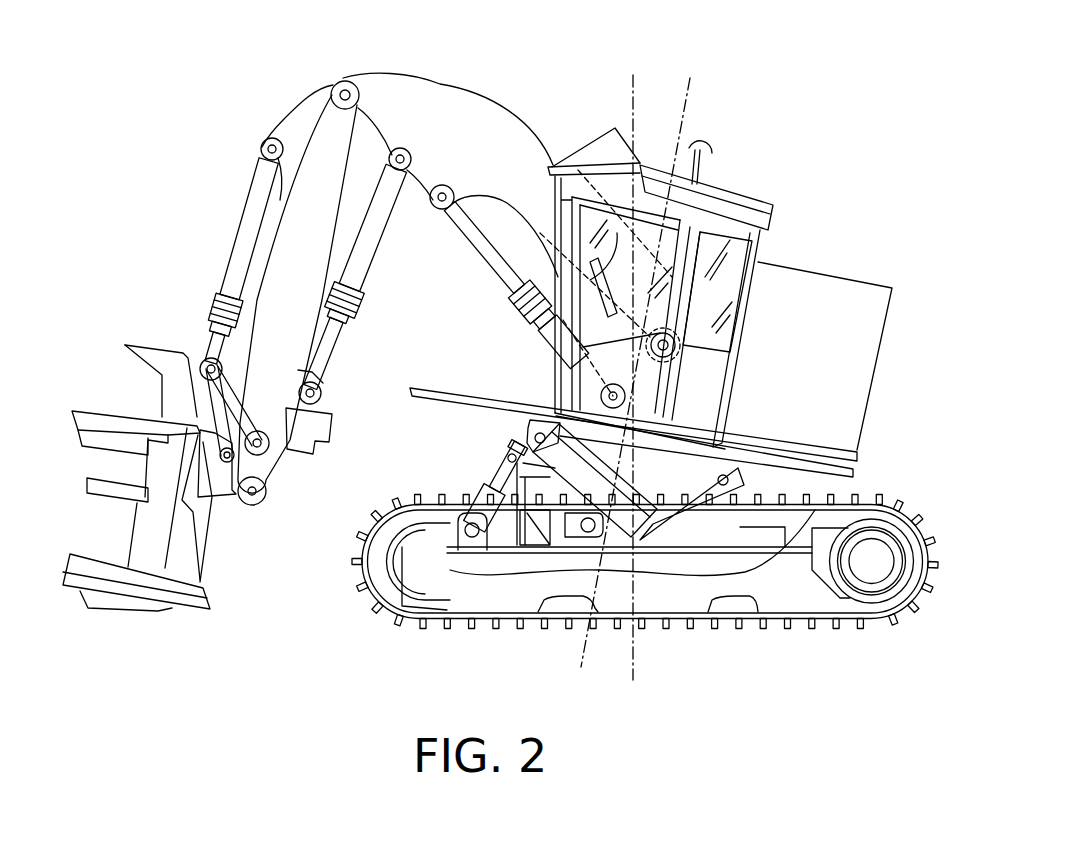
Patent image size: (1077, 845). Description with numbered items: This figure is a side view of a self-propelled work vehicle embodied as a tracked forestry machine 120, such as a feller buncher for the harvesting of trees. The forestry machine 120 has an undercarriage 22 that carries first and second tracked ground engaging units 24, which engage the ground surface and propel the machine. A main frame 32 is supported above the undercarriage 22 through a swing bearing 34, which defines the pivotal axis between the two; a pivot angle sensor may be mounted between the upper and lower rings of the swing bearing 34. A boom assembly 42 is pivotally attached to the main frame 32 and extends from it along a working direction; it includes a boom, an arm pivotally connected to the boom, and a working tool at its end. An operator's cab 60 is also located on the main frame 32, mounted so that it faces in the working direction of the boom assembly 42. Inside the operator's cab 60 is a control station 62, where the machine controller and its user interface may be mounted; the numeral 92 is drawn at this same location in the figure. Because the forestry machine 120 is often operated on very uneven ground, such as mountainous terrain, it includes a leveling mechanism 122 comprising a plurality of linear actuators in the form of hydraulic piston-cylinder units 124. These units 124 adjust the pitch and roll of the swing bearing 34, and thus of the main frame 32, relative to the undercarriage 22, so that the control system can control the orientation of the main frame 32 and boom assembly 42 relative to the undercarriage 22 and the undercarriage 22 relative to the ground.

The tracked forestry machine 120 is at (201, 56).
The boom assembly 42 is at (385, 63).
The control station 62 is at (617, 233).
The operator station control 92 is at (610, 289).
The operator's cab 60 is at (735, 189).
The swing bearing 34 is at (773, 450).
The main frame 32 is at (858, 463).
The tracked ground engaging units 24 is at (940, 557).
The undercarriage 22 is at (795, 540).
The hydraulic piston-cylinder units 124 is at (588, 482).
The leveling mechanism 122 is at (492, 456).